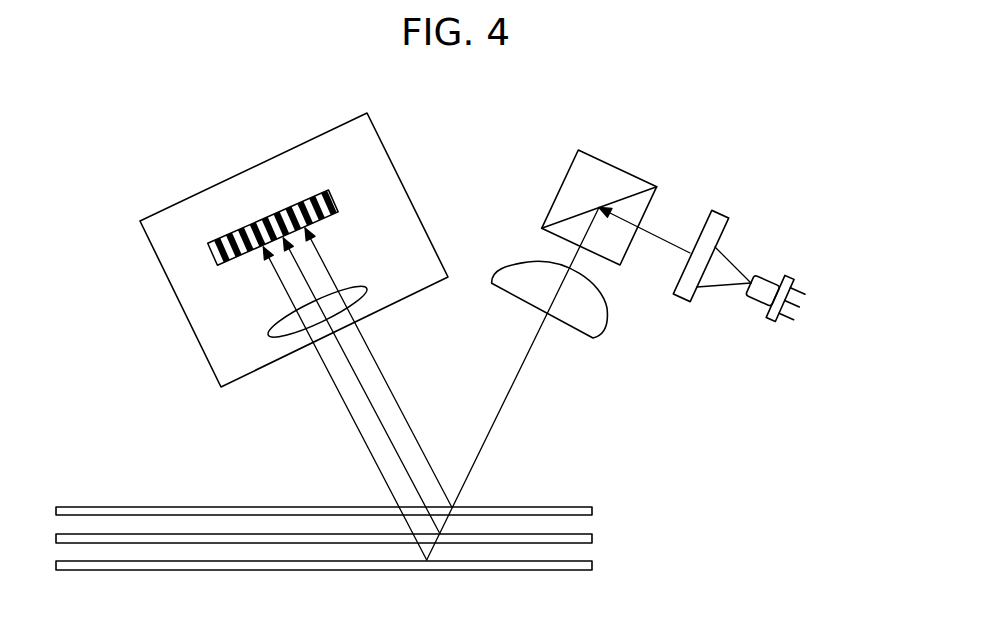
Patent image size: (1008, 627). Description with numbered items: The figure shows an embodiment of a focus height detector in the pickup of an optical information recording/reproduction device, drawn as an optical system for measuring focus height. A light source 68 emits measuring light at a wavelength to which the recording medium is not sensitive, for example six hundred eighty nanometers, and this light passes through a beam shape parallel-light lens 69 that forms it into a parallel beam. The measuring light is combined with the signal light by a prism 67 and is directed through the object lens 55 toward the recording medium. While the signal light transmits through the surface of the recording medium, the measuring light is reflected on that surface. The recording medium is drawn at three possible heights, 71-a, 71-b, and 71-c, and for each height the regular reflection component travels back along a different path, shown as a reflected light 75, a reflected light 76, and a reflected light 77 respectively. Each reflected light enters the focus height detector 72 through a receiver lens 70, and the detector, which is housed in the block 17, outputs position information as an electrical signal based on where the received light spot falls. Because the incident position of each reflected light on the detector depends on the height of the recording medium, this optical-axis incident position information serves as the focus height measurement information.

The light receiving unit 17 is at (270, 250).
The focus height detector 72 is at (289, 197).
The receiver lens 70 is at (337, 298).
The reflected light 75 is at (362, 390).
The reflected light 76 is at (406, 422).
The reflected light 77 is at (358, 436).
The prism 67 is at (610, 189).
The object lens 55 is at (605, 340).
The beam shape parallel-light lens 69 is at (723, 249).
The light source 68 is at (791, 279).
The height of the recording medium 71-a is at (592, 539).
The height of the recording medium 71-b is at (592, 511).
The height of the recording medium 71-c is at (592, 565).